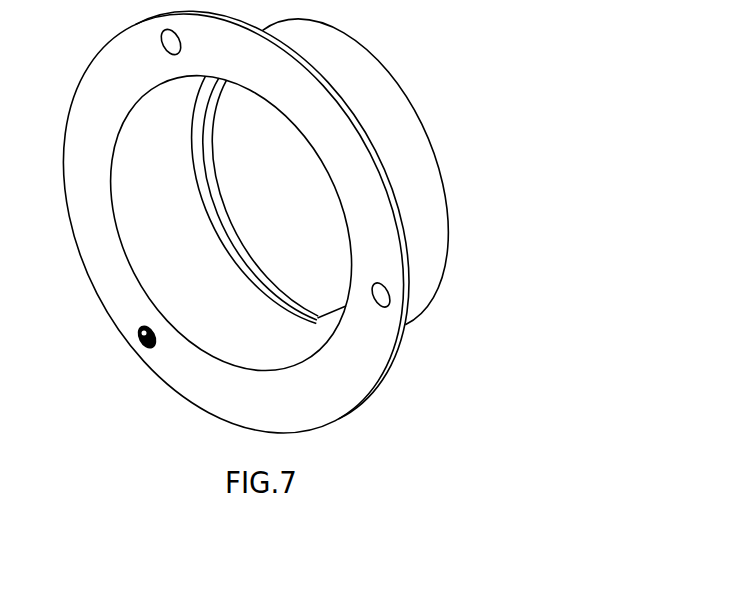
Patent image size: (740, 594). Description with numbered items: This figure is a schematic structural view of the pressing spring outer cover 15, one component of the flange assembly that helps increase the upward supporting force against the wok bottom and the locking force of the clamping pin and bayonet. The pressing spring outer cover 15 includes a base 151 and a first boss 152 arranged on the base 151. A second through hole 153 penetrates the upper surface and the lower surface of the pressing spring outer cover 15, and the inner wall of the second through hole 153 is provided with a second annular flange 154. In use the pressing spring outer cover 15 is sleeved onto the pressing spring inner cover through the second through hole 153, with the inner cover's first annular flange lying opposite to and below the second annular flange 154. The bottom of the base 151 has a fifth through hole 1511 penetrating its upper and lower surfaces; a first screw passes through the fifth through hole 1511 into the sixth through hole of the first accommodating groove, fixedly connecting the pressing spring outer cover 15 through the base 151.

The pressing spring outer cover 15 is at (316, 245).
The base 151 is at (256, 245).
The fifth through hole 1511 is at (157, 338).
The first boss 152 is at (417, 174).
The second through hole 153 is at (320, 255).
The second annular flange 154 is at (327, 310).